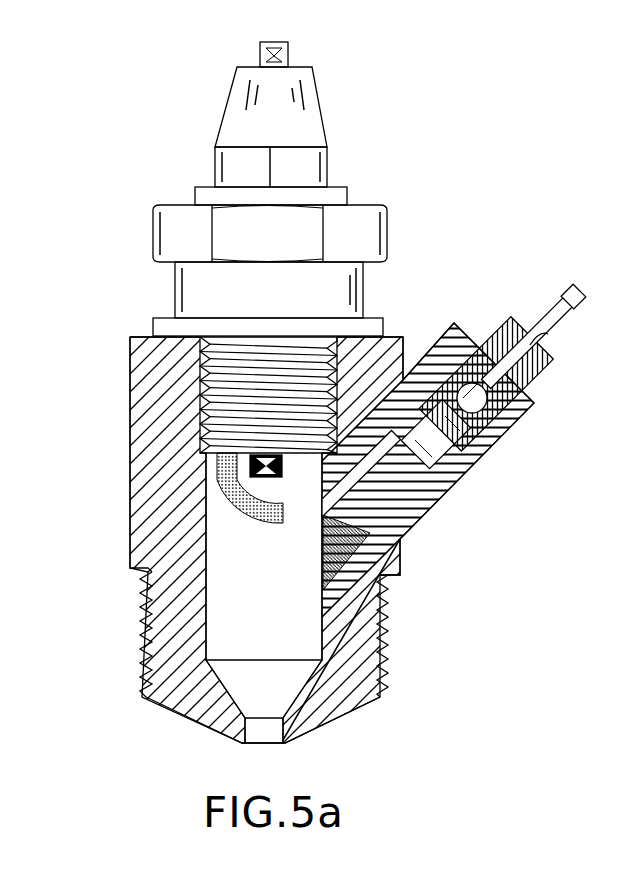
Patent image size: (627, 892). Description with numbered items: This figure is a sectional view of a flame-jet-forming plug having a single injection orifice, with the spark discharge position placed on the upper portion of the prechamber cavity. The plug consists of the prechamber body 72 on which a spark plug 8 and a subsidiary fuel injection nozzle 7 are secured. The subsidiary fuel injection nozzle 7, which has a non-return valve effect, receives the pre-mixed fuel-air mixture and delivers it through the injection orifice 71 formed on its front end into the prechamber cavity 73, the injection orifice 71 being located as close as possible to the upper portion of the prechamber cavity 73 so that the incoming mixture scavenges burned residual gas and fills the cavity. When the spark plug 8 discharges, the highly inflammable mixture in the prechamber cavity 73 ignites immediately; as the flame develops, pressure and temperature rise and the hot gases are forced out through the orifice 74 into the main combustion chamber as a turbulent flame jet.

The subsidiary fuel injection nozzle 7 is at (553, 378).
The spark plug 8 is at (380, 210).
The injection orifice 71 is at (398, 522).
The prechamber body 72 is at (360, 633).
The prechamber cavity 73 is at (218, 602).
The orifice 74 is at (253, 733).